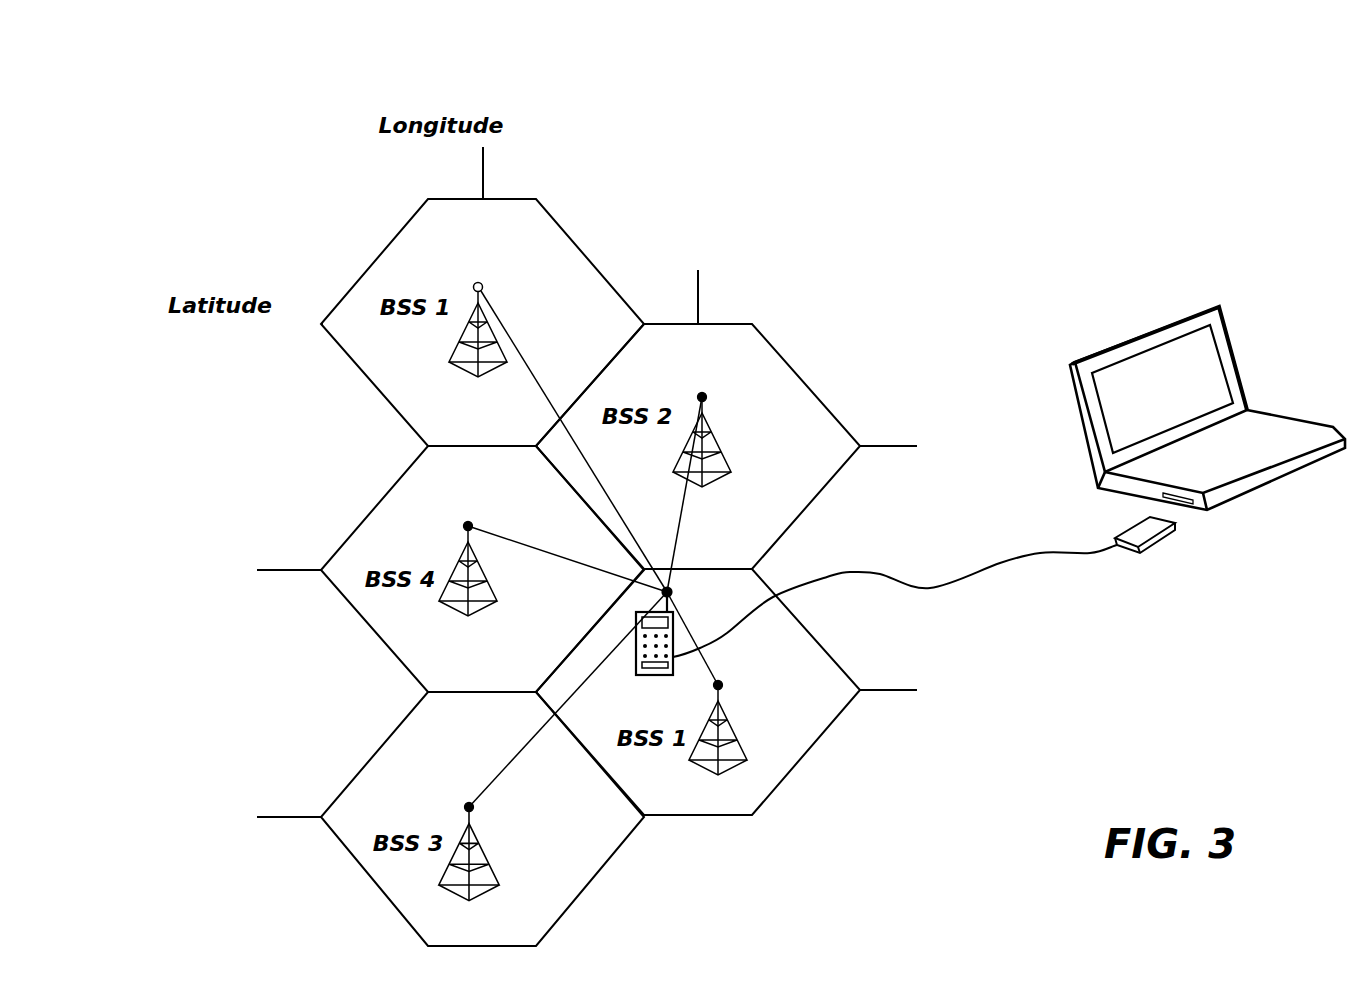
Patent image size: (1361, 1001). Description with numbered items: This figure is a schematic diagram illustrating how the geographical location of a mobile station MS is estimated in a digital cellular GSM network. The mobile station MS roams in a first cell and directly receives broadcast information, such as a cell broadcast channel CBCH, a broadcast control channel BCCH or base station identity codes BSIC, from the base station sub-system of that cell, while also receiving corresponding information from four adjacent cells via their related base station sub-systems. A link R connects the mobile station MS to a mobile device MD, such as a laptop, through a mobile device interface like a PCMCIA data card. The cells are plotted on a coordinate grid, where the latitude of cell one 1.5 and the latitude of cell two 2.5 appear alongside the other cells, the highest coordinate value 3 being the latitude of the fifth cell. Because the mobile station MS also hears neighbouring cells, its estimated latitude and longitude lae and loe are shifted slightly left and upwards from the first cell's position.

The coordinate value 3 is at (307, 345).
The latitude of cell 1 1.5 is at (888, 671).
The latitude of cell 2 2.5 is at (888, 427).
The mobile device MD is at (1232, 345).